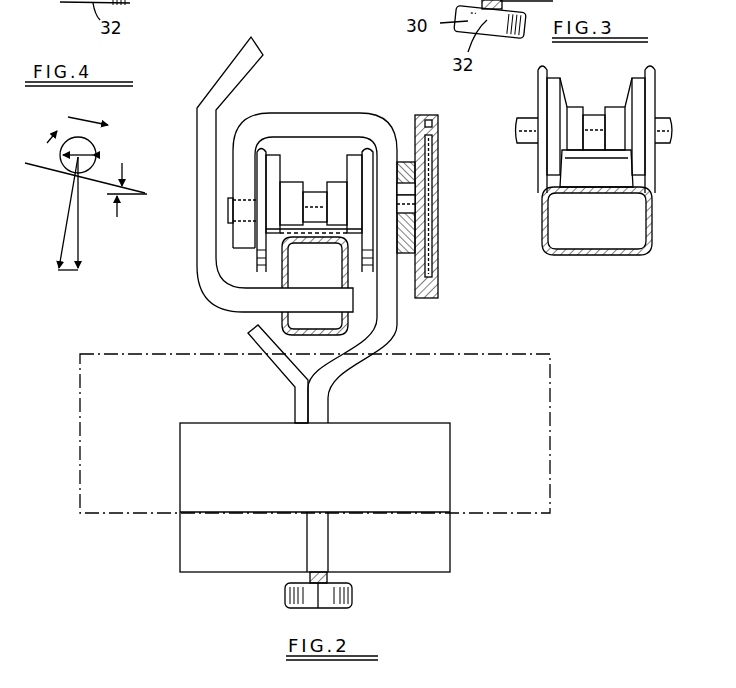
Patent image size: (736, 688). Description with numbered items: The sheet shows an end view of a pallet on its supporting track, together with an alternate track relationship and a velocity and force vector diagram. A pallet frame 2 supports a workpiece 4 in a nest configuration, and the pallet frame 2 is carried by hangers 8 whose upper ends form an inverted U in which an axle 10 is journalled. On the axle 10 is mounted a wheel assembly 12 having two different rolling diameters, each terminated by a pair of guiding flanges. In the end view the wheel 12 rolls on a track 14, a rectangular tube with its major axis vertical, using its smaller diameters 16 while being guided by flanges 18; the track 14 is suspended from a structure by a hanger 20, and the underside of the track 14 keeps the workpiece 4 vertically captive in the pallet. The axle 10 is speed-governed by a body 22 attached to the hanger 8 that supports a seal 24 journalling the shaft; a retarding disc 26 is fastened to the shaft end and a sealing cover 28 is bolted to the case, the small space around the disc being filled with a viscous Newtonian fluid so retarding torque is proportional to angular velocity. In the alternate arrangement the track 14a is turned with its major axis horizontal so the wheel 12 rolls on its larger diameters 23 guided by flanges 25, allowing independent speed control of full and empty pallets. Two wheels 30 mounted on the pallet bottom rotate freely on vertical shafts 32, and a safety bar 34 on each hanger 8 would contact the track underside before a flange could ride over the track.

In FIG. 2, the pallet frame 2 is at (451, 546).
In FIG. 2, the workpiece 4 is at (552, 435).
In FIG. 2, the hanger 8 is at (398, 325).
In FIG. 3, the axle 10 is at (677, 125).
In FIG. 2, the axle 10 is at (230, 213).
In FIG. 3, the wheel assembly 12 is at (657, 97).
In FIG. 2, the wheel assembly 12 is at (313, 190).
In FIG. 2, the track 14 is at (352, 318).
In FIG. 3, the rectangular tubular track 14a is at (652, 238).
In FIG. 3, the rolling diameters 16 is at (615, 107).
In FIG. 2, the rolling diameters 16 is at (302, 180).
In FIG. 2, the flanges 18 is at (285, 180).
In FIG. 2, the hanger 20 is at (252, 67).
In FIG. 2, the body 22 is at (415, 123).
In FIG. 3, the larger diameters 23 is at (557, 77).
In FIG. 2, the seal 24 is at (422, 190).
In FIG. 3, the flanges 25 is at (545, 68).
In FIG. 2, the retarding disc 26 is at (423, 166).
In FIG. 2, the sealing cover 28 is at (433, 133).
In FIG. 2, the wheel 30 is at (352, 598).
In FIG. 2, the shaft 32 is at (318, 590).
In FIG. 2, the bar 34 is at (256, 374).